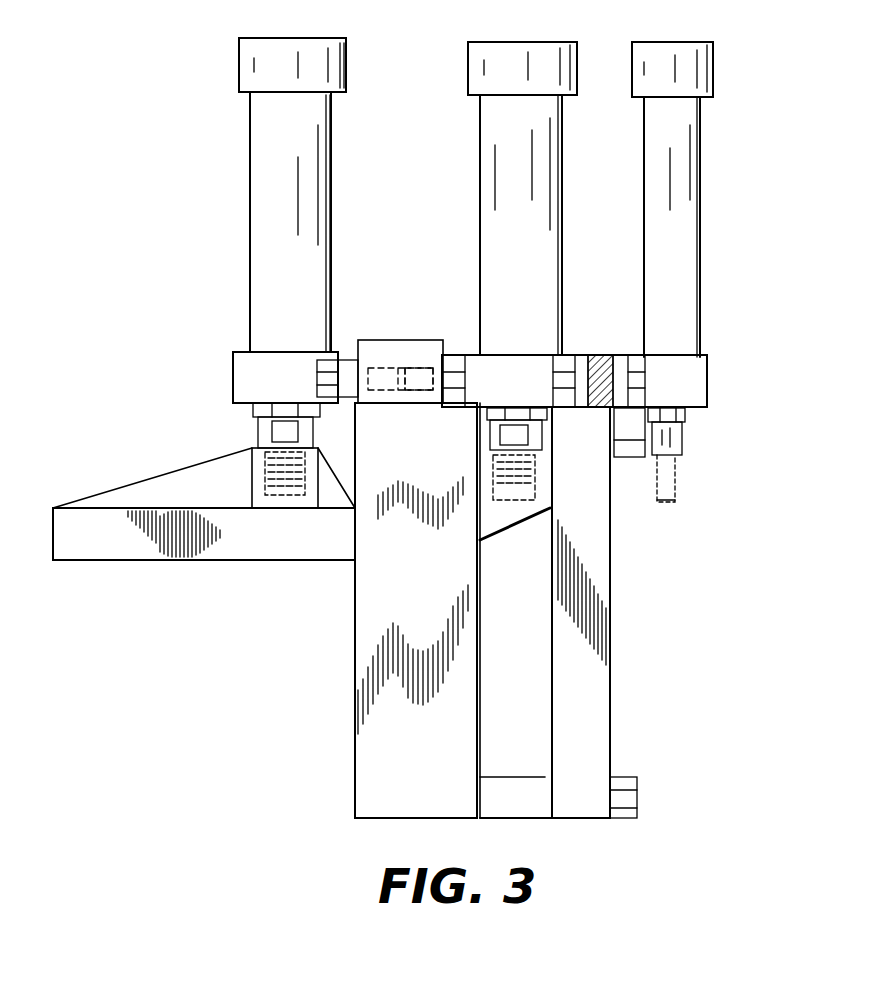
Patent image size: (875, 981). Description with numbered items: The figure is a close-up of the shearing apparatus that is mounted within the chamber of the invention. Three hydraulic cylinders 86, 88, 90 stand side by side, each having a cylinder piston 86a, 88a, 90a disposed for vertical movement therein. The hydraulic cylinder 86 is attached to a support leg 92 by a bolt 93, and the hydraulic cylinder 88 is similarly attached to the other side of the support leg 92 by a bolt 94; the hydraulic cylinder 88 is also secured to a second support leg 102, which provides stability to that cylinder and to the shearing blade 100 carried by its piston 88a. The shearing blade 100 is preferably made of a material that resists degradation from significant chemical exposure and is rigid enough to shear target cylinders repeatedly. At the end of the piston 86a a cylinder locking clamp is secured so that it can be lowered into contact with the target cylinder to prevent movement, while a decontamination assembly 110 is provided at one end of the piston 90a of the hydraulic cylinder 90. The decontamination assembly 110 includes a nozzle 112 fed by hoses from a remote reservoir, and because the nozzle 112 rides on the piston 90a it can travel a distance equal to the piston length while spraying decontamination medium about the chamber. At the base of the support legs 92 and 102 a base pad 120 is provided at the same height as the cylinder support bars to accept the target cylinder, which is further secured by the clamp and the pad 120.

The hydraulic cylinder 86 is at (292, 133).
The hydraulic cylinder 88 is at (526, 126).
The hydraulic cylinder 90 is at (682, 128).
The cylinder piston 86a is at (263, 437).
The cylinder piston 88a is at (495, 430).
The cylinder piston 90a is at (690, 425).
The bolt 93 is at (375, 388).
The bolt 94 is at (425, 388).
The support leg 92 is at (422, 602).
The shearing blade 100 is at (512, 510).
The support leg 102 is at (588, 725).
The decontamination assembly 110 is at (779, 472).
The nozzle 112 is at (665, 498).
The base pad 120 is at (500, 795).